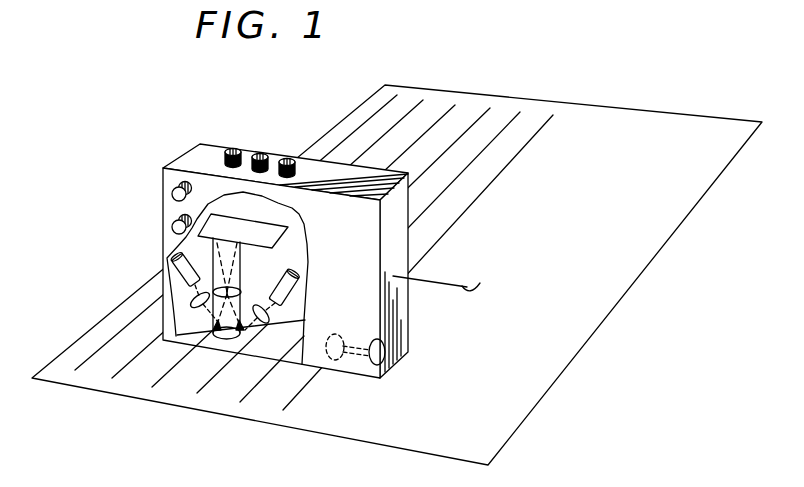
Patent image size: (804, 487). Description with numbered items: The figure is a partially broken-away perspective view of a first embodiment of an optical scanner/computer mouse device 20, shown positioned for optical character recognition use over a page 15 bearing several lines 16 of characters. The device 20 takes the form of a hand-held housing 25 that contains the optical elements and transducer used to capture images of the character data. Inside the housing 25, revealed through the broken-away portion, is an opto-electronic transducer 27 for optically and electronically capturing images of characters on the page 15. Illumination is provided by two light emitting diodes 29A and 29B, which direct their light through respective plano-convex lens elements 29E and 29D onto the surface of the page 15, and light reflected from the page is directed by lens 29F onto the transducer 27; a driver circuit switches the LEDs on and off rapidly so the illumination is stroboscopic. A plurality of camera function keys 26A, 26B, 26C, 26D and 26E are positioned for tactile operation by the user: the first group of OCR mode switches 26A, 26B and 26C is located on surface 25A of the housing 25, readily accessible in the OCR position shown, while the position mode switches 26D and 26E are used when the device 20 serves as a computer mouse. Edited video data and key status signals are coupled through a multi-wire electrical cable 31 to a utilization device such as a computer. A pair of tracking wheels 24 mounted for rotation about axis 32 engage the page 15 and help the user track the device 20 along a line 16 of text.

The page 15 is at (476, 418).
The lines of characters 16 is at (165, 379).
The optical scanner/computer mouse device 20 is at (73, 219).
The tracking wheels 24 is at (334, 363).
The housing 25 is at (400, 242).
The surface of housing 25A is at (338, 167).
The camera function key 26A is at (287, 159).
The camera function key 26B is at (260, 154).
The camera function key 26C is at (229, 150).
The camera function key 26D is at (174, 190).
The camera function key 26E is at (175, 224).
The opto-electronic transducer 27 is at (297, 214).
The light emitting diode 29A is at (296, 273).
The light emitting diode 29B is at (176, 258).
The lens element 29D is at (270, 312).
The lens element 29E is at (195, 301).
The lens 29F is at (241, 292).
The multi-wire electrical cable 31 is at (470, 282).
The axis 32 is at (352, 336).